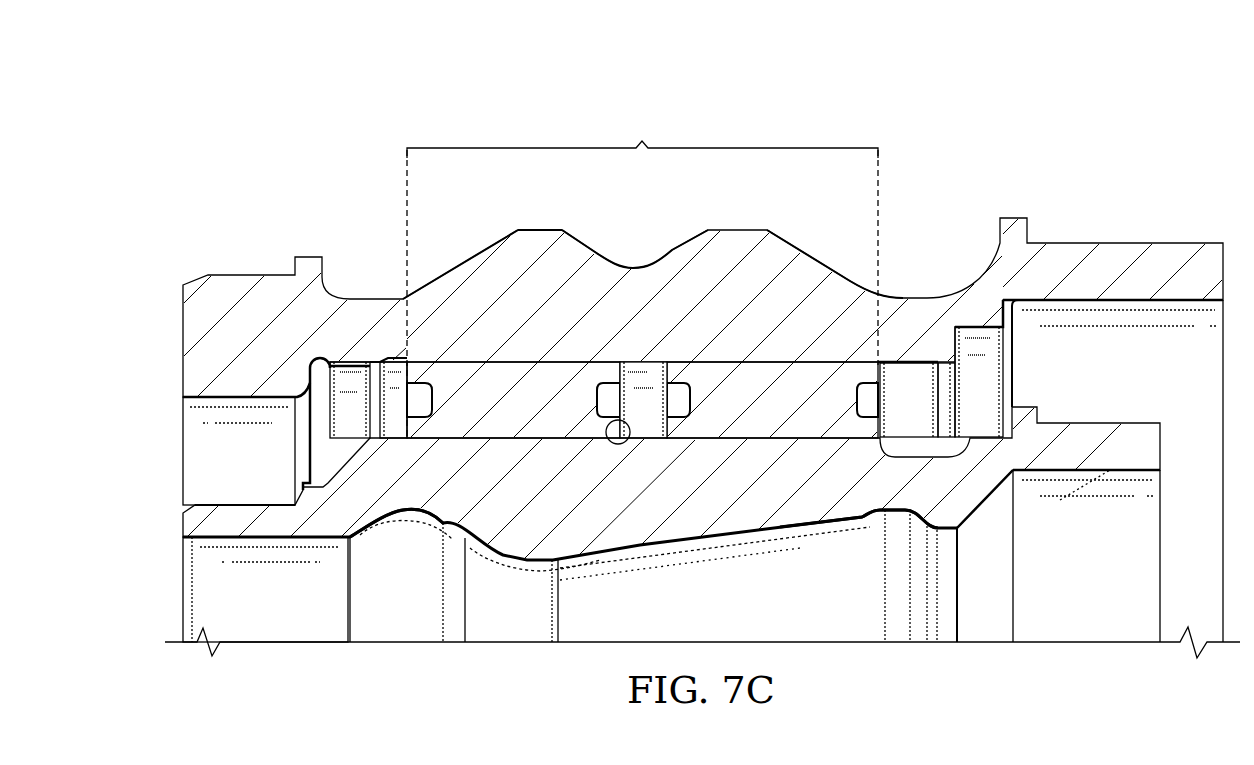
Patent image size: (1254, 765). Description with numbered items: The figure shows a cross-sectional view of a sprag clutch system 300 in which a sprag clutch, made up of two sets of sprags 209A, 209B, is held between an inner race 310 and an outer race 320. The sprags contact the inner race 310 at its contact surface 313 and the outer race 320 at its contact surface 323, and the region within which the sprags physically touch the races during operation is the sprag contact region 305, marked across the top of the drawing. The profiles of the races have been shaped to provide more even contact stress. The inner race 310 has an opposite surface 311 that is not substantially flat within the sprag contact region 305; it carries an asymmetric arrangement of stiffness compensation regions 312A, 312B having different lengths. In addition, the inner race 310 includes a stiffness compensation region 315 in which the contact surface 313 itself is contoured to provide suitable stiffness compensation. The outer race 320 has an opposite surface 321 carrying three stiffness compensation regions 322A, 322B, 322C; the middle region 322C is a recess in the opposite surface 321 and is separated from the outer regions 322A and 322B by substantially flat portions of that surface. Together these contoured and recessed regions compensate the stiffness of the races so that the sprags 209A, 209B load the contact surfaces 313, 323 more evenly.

The sprag clutch system 300 is at (484, 103).
The sprag contact region 305 is at (642, 276).
The inner race 310 is at (665, 504).
The opposite surface 311 is at (512, 553).
The stiffness compensation region 312A is at (420, 556).
The stiffness compensation region 312B is at (826, 557).
The contact surface 313 is at (607, 443).
The stiffness compensation region 315 is at (930, 445).
The outer race 320 is at (560, 306).
The opposite surface 321 is at (537, 229).
The stiffness compensation region 322A is at (443, 246).
The stiffness compensation region 322B is at (845, 244).
The stiffness compensation region 322C is at (639, 236).
The contact surface 323 is at (668, 360).
The set of sprags 209A is at (545, 416).
The set of sprags 209B is at (805, 414).